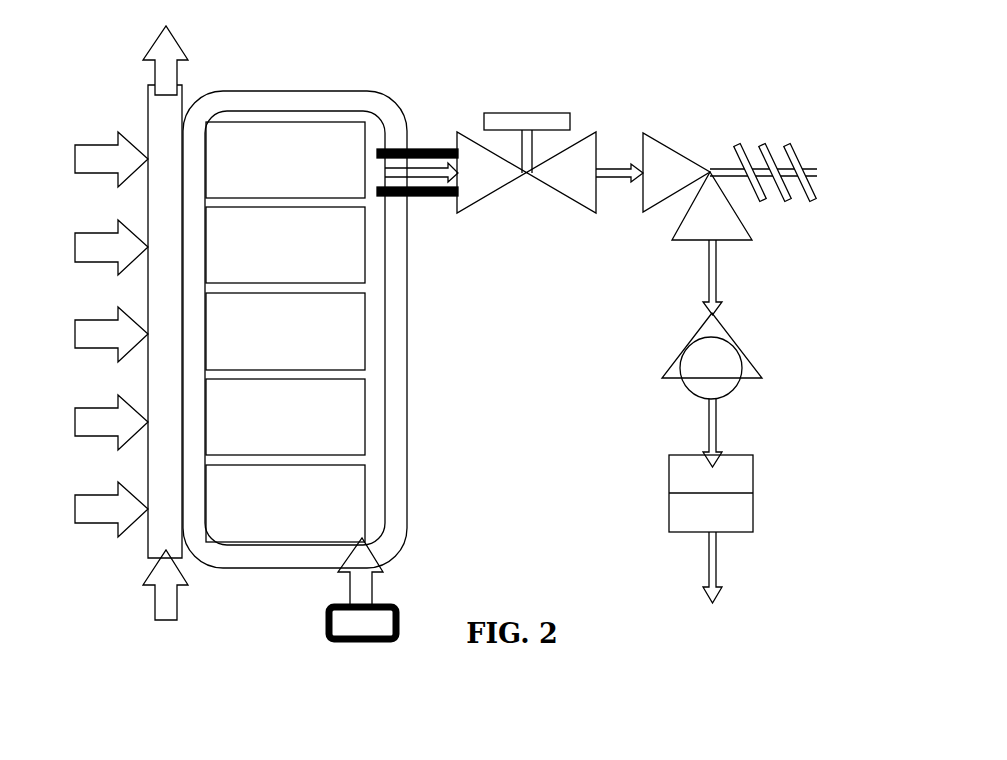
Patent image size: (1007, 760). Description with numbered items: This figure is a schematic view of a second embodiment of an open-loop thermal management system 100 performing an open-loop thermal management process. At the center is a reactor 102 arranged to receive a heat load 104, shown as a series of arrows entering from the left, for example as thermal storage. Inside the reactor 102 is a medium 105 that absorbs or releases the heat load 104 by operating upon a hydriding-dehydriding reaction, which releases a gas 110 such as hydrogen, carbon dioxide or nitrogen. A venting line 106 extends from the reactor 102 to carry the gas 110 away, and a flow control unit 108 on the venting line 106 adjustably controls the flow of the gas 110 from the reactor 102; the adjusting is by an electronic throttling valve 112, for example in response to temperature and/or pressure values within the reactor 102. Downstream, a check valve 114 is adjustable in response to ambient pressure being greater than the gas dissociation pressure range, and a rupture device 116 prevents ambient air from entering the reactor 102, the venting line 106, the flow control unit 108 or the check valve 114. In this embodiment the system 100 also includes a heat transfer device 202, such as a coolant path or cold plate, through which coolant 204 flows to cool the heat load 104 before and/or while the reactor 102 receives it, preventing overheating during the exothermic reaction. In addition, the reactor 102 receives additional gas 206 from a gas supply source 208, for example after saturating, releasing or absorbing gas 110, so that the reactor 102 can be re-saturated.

The open-loop thermal management system 100 is at (665, 92).
The reactor 102 is at (388, 346).
The heat load 104 is at (103, 145).
The medium 105 is at (305, 246).
The venting line 106 is at (433, 141).
The flow control unit 108 is at (556, 220).
The gas 110 is at (430, 178).
The electronic throttling valve 112 is at (543, 113).
The check valve 114 is at (776, 352).
The rupture device 116 is at (776, 480).
The heat transfer device 202 is at (130, 548).
The coolant 204 is at (177, 43).
The additional gas 206 is at (373, 592).
The gas supply source 208 is at (370, 652).